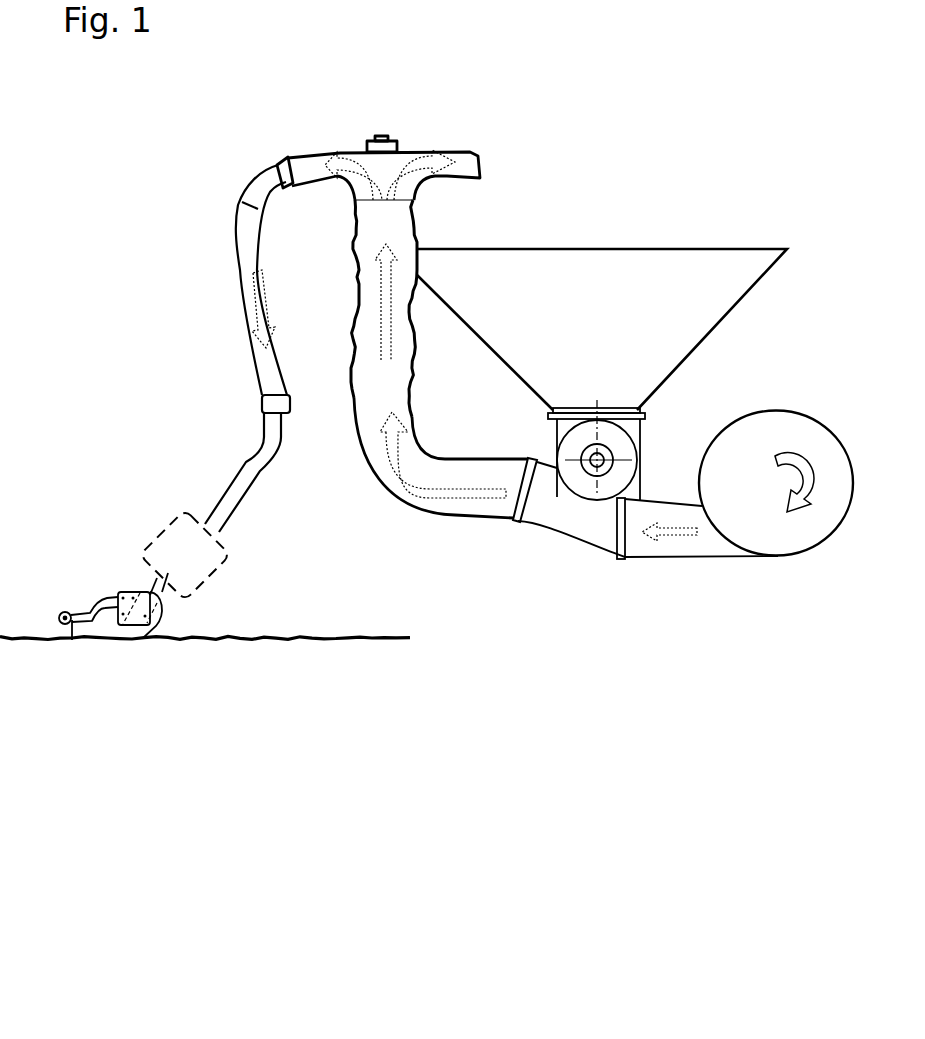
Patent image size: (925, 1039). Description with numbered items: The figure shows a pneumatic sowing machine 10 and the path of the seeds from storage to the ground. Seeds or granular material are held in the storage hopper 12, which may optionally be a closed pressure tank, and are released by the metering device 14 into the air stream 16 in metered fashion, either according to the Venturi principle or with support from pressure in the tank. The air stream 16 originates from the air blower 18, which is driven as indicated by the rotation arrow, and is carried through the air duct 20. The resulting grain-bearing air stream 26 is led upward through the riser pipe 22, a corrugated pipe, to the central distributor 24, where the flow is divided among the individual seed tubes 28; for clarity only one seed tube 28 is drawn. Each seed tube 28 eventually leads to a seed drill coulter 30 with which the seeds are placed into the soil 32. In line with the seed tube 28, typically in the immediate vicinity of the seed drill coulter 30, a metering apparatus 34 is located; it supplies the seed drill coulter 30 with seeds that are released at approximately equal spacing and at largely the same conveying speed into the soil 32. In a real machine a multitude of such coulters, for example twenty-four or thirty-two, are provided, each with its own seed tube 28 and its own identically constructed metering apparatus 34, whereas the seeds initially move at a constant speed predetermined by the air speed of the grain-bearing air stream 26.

The sowing machine 10 is at (573, 752).
The storage hopper 12 is at (580, 331).
The metering device 14 is at (627, 447).
The air stream 16 is at (680, 530).
The air blower 18 is at (716, 487).
The air duct 20 is at (565, 535).
The riser pipe 22 is at (410, 233).
The central distributor 24 is at (333, 127).
The grain-bearing air stream 26 is at (458, 493).
The seed tube 28 is at (246, 239).
The seed drill coulter 30 is at (120, 576).
The soil 32 is at (253, 638).
The metering apparatus 34 is at (195, 571).